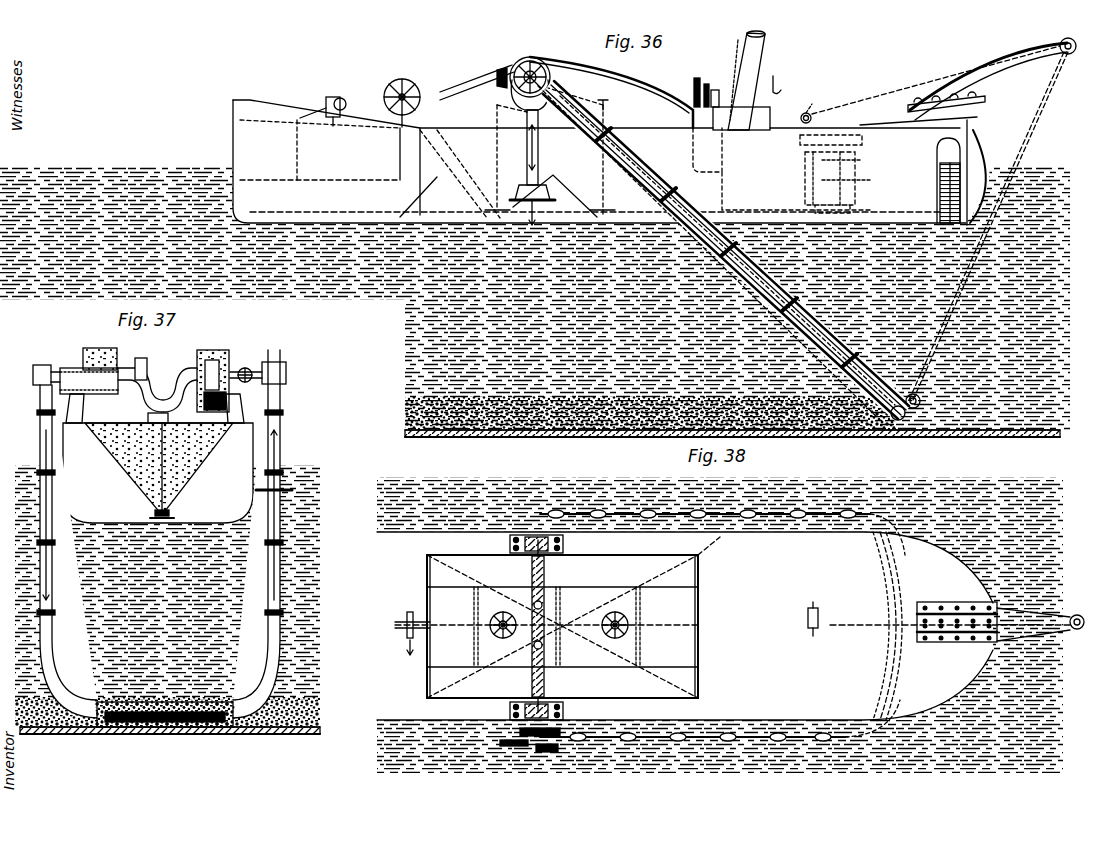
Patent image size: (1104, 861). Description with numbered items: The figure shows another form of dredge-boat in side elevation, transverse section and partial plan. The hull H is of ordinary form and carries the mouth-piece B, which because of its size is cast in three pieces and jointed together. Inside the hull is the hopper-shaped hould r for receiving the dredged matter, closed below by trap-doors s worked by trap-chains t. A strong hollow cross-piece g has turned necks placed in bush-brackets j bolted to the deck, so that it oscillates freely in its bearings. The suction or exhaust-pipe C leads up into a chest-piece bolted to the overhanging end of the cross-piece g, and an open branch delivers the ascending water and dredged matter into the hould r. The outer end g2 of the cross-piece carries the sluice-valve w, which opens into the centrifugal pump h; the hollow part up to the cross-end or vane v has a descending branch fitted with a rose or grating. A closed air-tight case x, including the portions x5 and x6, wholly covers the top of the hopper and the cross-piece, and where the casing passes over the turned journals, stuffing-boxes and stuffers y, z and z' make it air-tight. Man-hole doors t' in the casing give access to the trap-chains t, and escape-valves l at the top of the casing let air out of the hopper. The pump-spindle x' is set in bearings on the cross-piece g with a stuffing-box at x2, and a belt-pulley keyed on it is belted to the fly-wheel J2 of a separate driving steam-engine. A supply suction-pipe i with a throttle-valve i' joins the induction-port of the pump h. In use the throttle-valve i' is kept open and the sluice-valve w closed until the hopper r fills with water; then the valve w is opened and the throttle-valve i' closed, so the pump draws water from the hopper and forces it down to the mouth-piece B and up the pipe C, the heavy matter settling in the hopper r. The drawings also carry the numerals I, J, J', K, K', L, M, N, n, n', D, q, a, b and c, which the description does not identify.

In FIG. 36, the hull H is at (609, 162).
In FIG. 37, the hull H is at (158, 473).
In FIG. 38, the hull H is at (685, 626).
In FIG. 36, the ladder well I is at (781, 170).
In FIG. 38, the ladder well I is at (540, 626).
In FIG. 38, the shaft J is at (546, 621).
In FIG. 38, the shaft bearing J' is at (413, 649).
In FIG. 36, the fly-wheel J2 is at (408, 103).
In FIG. 36, the guide pulley K is at (801, 120).
In FIG. 38, the guide pulley K is at (807, 623).
In FIG. 36, the pulley bracket K' is at (812, 102).
In FIG. 38, the pulley bracket K' is at (827, 607).
In FIG. 36, the hoisting rope L is at (940, 223).
In FIG. 38, the hoisting rope L is at (950, 622).
In FIG. 36, the sheave M is at (1075, 46).
In FIG. 38, the sheave M is at (1083, 622).
In FIG. 36, the gallows frame N is at (987, 81).
In FIG. 36, the escape-valve l is at (729, 250).
In FIG. 38, the escape-valve l is at (702, 631).
In FIG. 36, the supply suction-pipe i is at (529, 147).
In FIG. 36, the throttle-valve i' is at (532, 204).
In FIG. 36, the upper tumbler n is at (521, 83).
In FIG. 36, the tumbler bracket n' is at (477, 90).
In FIG. 36, the trap-chain t is at (545, 151).
In FIG. 36, the man-hole door t' is at (604, 106).
In FIG. 37, the man-hole door t' is at (158, 418).
In FIG. 38, the man-hole door t' is at (503, 617).
In FIG. 36, the trap-door s is at (550, 208).
In FIG. 37, the trap-door s is at (167, 510).
In FIG. 37, the suction or exhaust-pipe C is at (62, 551).
In FIG. 37, the suction head D is at (165, 727).
In FIG. 37, the centrifugal pump h is at (262, 529).
In FIG. 37, the hopper-shaped hould r is at (159, 469).
In FIG. 37, the connecting pipe q is at (157, 385).
In FIG. 37, the hollow cross-piece g is at (213, 381).
In FIG. 38, the hollow cross-piece g is at (536, 627).
In FIG. 37, the cross-end or vane v is at (215, 395).
In FIG. 37, the sluice-valve w is at (246, 367).
In FIG. 37, the air-tight casing x is at (46, 369).
In FIG. 38, the air-tight casing x is at (596, 625).
In FIG. 37, the pump-spindle x' is at (154, 353).
In FIG. 37, the stuffing-box x2 is at (116, 344).
In FIG. 37, the casing portion x5 is at (204, 342).
In FIG. 37, the casing portion x6 is at (230, 341).
In FIG. 37, the stuffing-box y is at (89, 381).
In FIG. 37, the stuffer z is at (104, 361).
In FIG. 37, the stuffer z' is at (81, 343).
In FIG. 37, the outer end of cross-piece g2 is at (247, 346).
In FIG. 37, the bush-bracket j is at (155, 408).
In FIG. 38, the mouth-piece B is at (890, 626).
In FIG. 38, the frame b is at (896, 626).
In FIG. 38, the rib c is at (883, 626).
In FIG. 38, the keel a is at (890, 690).